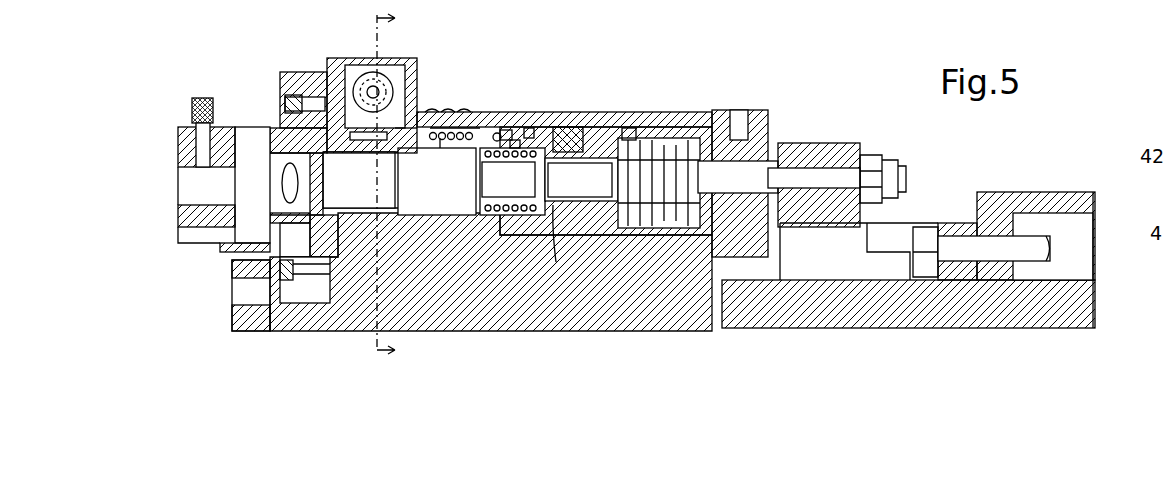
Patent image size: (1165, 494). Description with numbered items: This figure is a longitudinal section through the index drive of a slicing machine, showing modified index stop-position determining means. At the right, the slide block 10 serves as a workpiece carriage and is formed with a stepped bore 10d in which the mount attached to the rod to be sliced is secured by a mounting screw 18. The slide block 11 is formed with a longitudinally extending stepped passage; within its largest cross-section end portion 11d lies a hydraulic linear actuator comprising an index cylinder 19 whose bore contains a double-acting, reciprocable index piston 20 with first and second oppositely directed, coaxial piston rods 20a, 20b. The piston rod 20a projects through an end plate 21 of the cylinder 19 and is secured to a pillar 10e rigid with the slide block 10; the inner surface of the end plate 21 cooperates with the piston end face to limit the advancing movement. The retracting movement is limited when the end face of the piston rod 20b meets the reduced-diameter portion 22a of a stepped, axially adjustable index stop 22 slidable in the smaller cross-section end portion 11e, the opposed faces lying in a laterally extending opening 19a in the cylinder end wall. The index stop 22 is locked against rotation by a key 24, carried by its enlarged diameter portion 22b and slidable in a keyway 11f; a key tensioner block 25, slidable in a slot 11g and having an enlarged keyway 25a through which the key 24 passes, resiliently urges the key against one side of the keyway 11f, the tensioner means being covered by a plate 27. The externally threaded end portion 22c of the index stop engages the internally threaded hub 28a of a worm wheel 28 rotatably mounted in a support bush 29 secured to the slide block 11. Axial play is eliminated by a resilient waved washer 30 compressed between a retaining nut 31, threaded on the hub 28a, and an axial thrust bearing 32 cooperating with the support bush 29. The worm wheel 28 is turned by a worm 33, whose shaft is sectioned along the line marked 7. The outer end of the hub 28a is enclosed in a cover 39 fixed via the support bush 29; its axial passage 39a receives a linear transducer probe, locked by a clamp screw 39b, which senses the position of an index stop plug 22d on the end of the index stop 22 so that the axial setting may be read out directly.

The section line 7- 7 is at (394, 186).
The slide block 10 is at (921, 361).
The stepped bore 10d is at (1080, 272).
The pillar 10e is at (836, 143).
The slide block 11 is at (513, 354).
The largest cross-section end portion 11d is at (630, 128).
The smaller cross-section end portion 11e is at (529, 126).
The keyway 11f is at (513, 140).
The slot 11g is at (443, 148).
The mounting screw 18 is at (1052, 248).
The index cylinder 19 is at (567, 126).
The laterally extending opening 19a is at (553, 230).
The index piston 20 is at (655, 137).
The first piston rod 20a is at (738, 177).
The second piston rod 20b is at (581, 179).
The end plate 21 is at (762, 124).
The index stop 22 is at (474, 228).
The reduced-diameter portion 22a is at (512, 181).
The enlarged diameter portion 22b is at (437, 181).
The reduced-diameter end portion 22c is at (359, 180).
The index stop plug 22d is at (285, 182).
The key 24 is at (503, 128).
The key tensioner block 25 is at (455, 112).
The enlarged keyway 25a is at (443, 112).
The plate 27 is at (497, 128).
The worm wheel 28 is at (414, 92).
The hub 28a is at (332, 108).
The support bush 29 is at (318, 72).
The resilient waved washer 30 is at (232, 297).
The retaining nut 31 is at (282, 234).
The axial thrust bearing 32 is at (291, 305).
The worm 33 is at (380, 82).
The cover 39 is at (283, 80).
The axial passage 39a is at (195, 195).
The clamp screw 39b is at (203, 98).